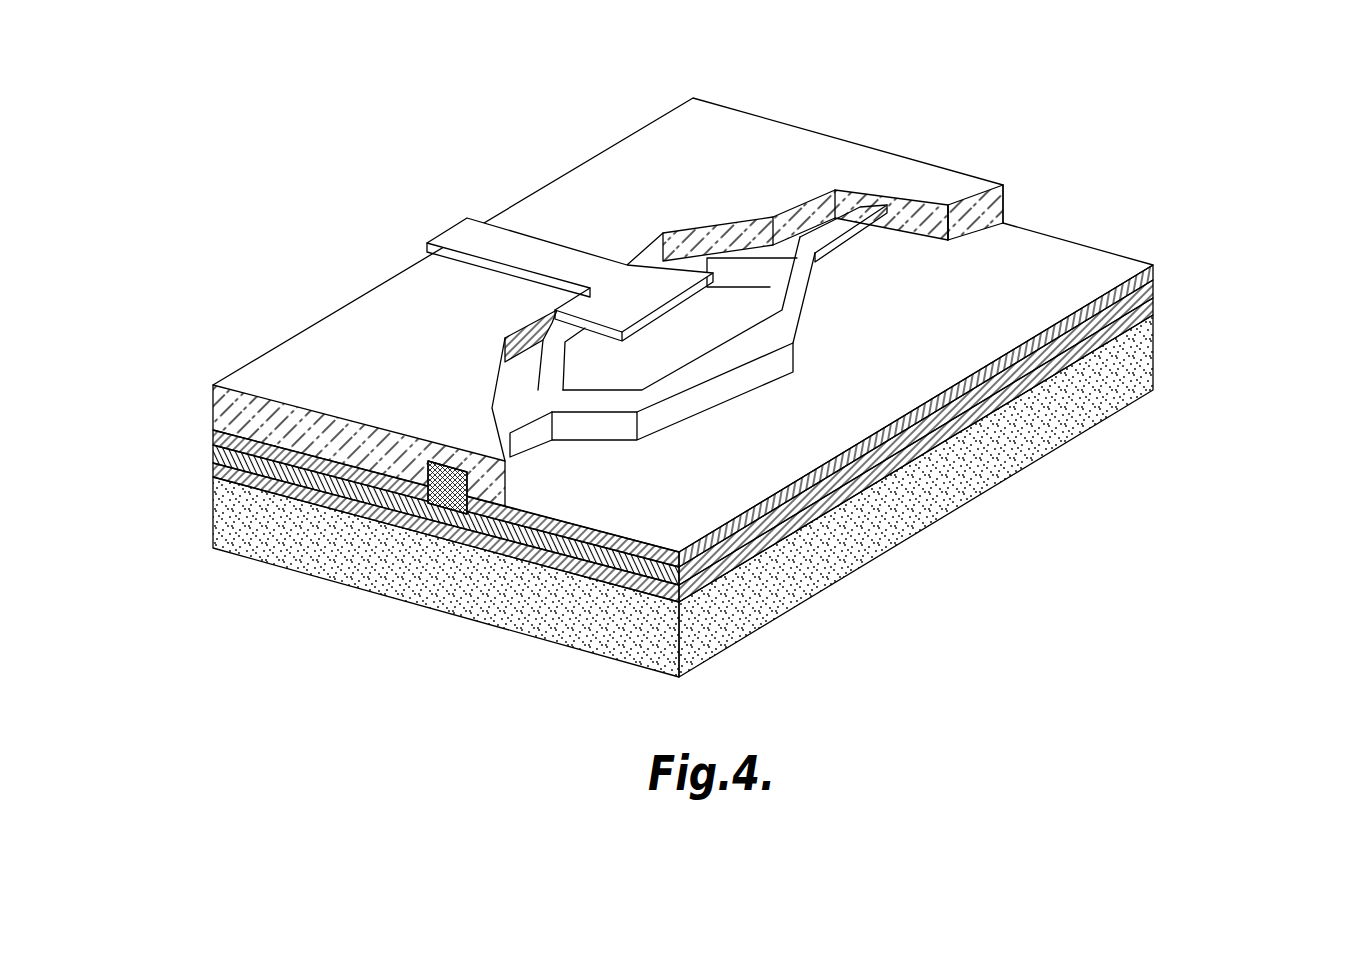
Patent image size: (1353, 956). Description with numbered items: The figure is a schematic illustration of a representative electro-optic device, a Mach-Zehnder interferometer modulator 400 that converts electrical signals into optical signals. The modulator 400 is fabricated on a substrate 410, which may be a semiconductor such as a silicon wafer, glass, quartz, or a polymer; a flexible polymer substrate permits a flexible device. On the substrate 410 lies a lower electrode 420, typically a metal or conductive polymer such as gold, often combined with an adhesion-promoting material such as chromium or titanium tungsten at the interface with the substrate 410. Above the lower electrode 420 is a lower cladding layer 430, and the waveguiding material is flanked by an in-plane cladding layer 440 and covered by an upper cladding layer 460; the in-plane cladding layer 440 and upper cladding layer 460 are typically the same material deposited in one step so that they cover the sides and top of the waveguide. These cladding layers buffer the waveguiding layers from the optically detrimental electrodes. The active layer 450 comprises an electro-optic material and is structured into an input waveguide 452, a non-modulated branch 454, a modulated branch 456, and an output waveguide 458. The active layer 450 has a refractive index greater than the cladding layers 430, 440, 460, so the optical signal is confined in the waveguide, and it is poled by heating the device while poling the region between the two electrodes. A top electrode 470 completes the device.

The M-Z modulator 400 is at (205, 172).
The substrate 410 is at (213, 505).
The lower electrode 420 is at (213, 462).
The lower cladding layer 430 is at (1157, 300).
The in-plane cladding layer 440 is at (1157, 270).
The active layer 450 is at (433, 483).
The input waveguide 452 is at (518, 407).
The non-modulated branch 454 is at (768, 327).
The modulated branch 456 is at (690, 237).
The output waveguide 458 is at (878, 227).
The upper cladding layer 460 is at (793, 135).
The top electrode 470 is at (567, 257).